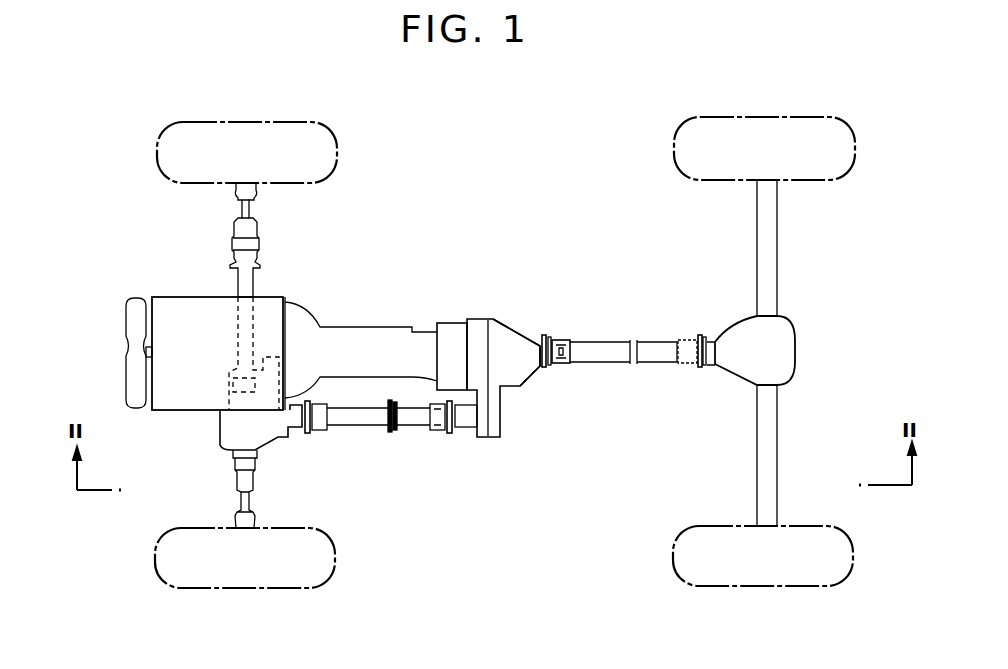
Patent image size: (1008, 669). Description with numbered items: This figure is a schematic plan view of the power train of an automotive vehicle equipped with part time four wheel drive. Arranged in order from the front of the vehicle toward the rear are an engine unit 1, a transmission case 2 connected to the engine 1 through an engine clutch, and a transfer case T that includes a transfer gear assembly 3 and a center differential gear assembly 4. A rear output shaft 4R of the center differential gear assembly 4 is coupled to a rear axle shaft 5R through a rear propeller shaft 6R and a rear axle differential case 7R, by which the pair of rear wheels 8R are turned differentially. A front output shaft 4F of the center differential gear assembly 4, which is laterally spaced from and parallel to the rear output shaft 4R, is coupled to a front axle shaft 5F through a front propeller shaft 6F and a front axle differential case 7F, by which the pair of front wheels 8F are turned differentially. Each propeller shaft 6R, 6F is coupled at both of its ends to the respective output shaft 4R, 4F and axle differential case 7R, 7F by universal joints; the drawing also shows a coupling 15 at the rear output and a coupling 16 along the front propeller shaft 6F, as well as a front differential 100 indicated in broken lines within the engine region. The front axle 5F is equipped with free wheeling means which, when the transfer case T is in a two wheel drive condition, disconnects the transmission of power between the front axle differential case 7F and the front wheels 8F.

The engine unit 1 is at (275, 305).
The transmission case 2 is at (366, 327).
The transfer gear assembly 3 is at (454, 325).
The center differential gear assembly 4 is at (518, 341).
The transfer case T is at (539, 328).
The coupling flange 15 is at (552, 332).
The coupling on front propeller shaft 16 is at (433, 430).
The front differential 100 is at (240, 393).
The front output shaft 4F is at (460, 430).
The rear output shaft 4R is at (540, 368).
The front axle shaft 5F is at (237, 285).
The rear axle shaft 5R is at (778, 272).
The front propeller shaft 6F is at (403, 428).
The rear propeller shaft 6R is at (615, 364).
The front axle differential case 7F is at (226, 437).
The rear axle differential case 7R is at (738, 338).
The front wheels 8F is at (337, 167).
The rear wheels 8R is at (672, 168).